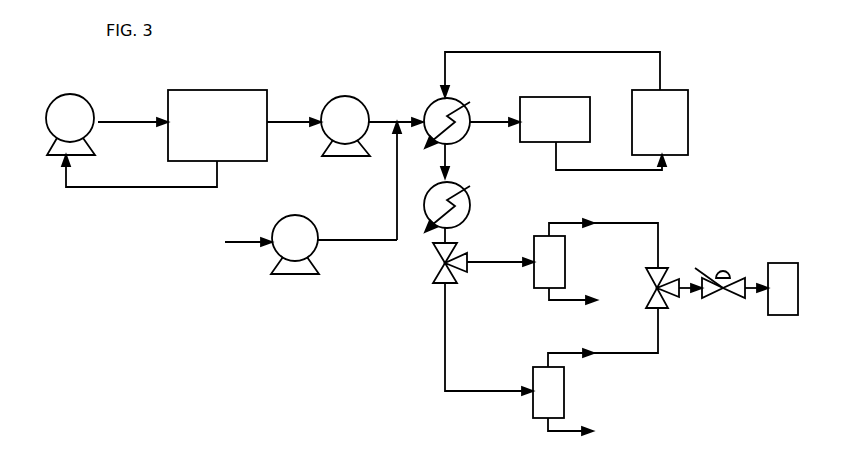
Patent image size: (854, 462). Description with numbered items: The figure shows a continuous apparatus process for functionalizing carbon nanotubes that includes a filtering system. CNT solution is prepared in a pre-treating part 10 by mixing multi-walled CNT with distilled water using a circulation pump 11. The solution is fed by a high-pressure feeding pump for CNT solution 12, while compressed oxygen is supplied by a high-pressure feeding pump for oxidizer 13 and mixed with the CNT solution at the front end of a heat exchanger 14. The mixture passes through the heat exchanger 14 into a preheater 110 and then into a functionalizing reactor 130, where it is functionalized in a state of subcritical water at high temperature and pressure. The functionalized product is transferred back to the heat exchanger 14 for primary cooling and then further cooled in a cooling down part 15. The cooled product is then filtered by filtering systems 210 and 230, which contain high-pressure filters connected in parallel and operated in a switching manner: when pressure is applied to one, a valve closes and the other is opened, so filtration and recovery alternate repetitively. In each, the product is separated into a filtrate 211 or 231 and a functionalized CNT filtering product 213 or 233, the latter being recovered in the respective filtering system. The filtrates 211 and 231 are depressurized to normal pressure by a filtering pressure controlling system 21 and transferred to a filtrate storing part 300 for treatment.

The pre-treating part 10 is at (217, 90).
The circulation pump 11 is at (80, 95).
The high-pressure feeding pump for CNT solution 12 is at (352, 97).
The high-pressure feeding pump for oxidizer 13 is at (300, 216).
The heat exchanger 14 is at (461, 99).
The cooling down part 15 is at (458, 182).
The preheater 110 is at (554, 97).
The functionalizing reactor 130 is at (673, 90).
The filtering system 210 is at (566, 262).
The filtrate 211 is at (582, 222).
The functionalized CNT filtering product 213 is at (582, 299).
The filtering system 230 is at (564, 392).
The filtrate 231 is at (582, 352).
The functionalized CNT filtering product 233 is at (582, 430).
The filtering pressure controlling system 21 is at (734, 275).
The filtrate storing part 300 is at (786, 263).